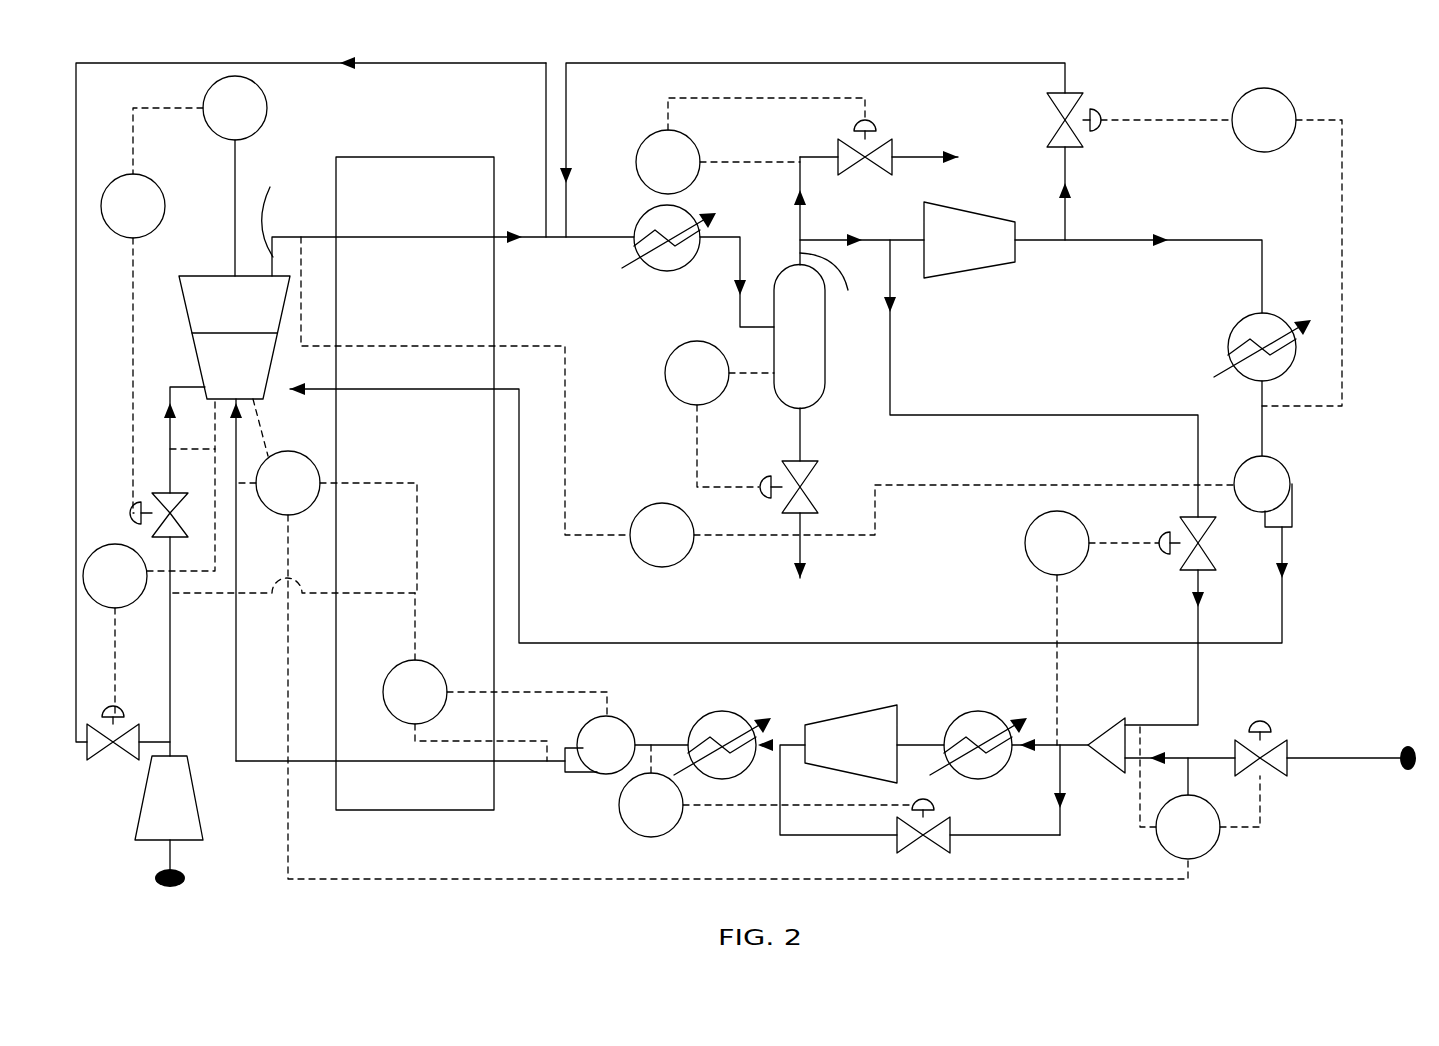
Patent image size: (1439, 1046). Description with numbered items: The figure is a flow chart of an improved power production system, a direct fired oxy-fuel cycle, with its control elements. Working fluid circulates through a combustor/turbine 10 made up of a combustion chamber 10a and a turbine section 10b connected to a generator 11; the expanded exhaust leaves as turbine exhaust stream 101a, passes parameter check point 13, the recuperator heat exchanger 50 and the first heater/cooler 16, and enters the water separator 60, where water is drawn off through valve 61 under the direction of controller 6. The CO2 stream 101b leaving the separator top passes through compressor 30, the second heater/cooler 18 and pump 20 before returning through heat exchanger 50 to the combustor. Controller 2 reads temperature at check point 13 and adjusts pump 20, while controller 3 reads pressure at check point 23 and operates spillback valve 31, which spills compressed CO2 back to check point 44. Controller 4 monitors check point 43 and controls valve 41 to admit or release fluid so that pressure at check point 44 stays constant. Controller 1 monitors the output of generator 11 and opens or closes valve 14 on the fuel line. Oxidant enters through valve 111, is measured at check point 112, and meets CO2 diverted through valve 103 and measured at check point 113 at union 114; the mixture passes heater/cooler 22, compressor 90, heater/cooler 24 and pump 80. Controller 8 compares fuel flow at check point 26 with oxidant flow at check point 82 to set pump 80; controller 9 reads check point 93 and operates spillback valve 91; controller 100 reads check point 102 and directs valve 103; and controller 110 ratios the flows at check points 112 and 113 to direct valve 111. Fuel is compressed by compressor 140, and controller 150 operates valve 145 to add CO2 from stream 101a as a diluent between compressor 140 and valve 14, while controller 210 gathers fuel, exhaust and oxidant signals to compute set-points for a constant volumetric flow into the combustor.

The power controller 1 is at (152, 310).
The pump controller 2 is at (767, 402).
The pump suction pressure controller 3 is at (1221, 247).
The controller 4 is at (750, 146).
The water separator controller 6 is at (719, 414).
The oxidant pump controller 8 is at (495, 677).
The oxidant pressure controller 9 is at (765, 791).
The combustor/turbine 10 is at (216, 337).
The combustion chamber 10a is at (235, 372).
The turbine section 10b is at (235, 309).
The generator 11 is at (235, 176).
The parameter check point 13 is at (453, 242).
The valve 14 is at (168, 515).
The first heater/cooler 16 is at (669, 256).
The second heater/cooler 18 is at (1253, 347).
The pump 20 is at (1263, 491).
The heater/cooler 22 is at (978, 731).
The parameter check point 23 is at (1240, 418).
The heater/cooler 24 is at (722, 730).
The parameter check point 26 is at (155, 646).
The compressor 30 is at (969, 240).
The spillback valve 31 is at (1062, 120).
The valve 41 is at (879, 159).
The parameter check point 43 is at (792, 198).
The parameter check point 44 is at (566, 261).
The recuperator heat exchanger 50 is at (415, 483).
The water separator 60 is at (799, 337).
The valve 61 is at (799, 493).
The pump 80 is at (600, 745).
The parameter check point 82 is at (400, 778).
The compressor 90 is at (851, 744).
The spillback valve 91 is at (981, 810).
The parameter check point 93 is at (661, 729).
The oxidant pressure controller 100 is at (1092, 628).
The turbine exhaust stream 101a is at (279, 209).
The CO2 stream 101b is at (837, 285).
The parameter check point 102 is at (1050, 761).
The valve 103 is at (1205, 543).
The dilution controller 110 is at (1200, 792).
The valve 111 is at (1327, 759).
The parameter check point 112 is at (1180, 740).
The parameter check point 113 is at (1164, 647).
The union 114 is at (1101, 757).
The compressor 140 is at (184, 822).
The valve 145 is at (106, 741).
The controller 150 is at (149, 556).
The combustor inlet flow controller 210 is at (679, 639).